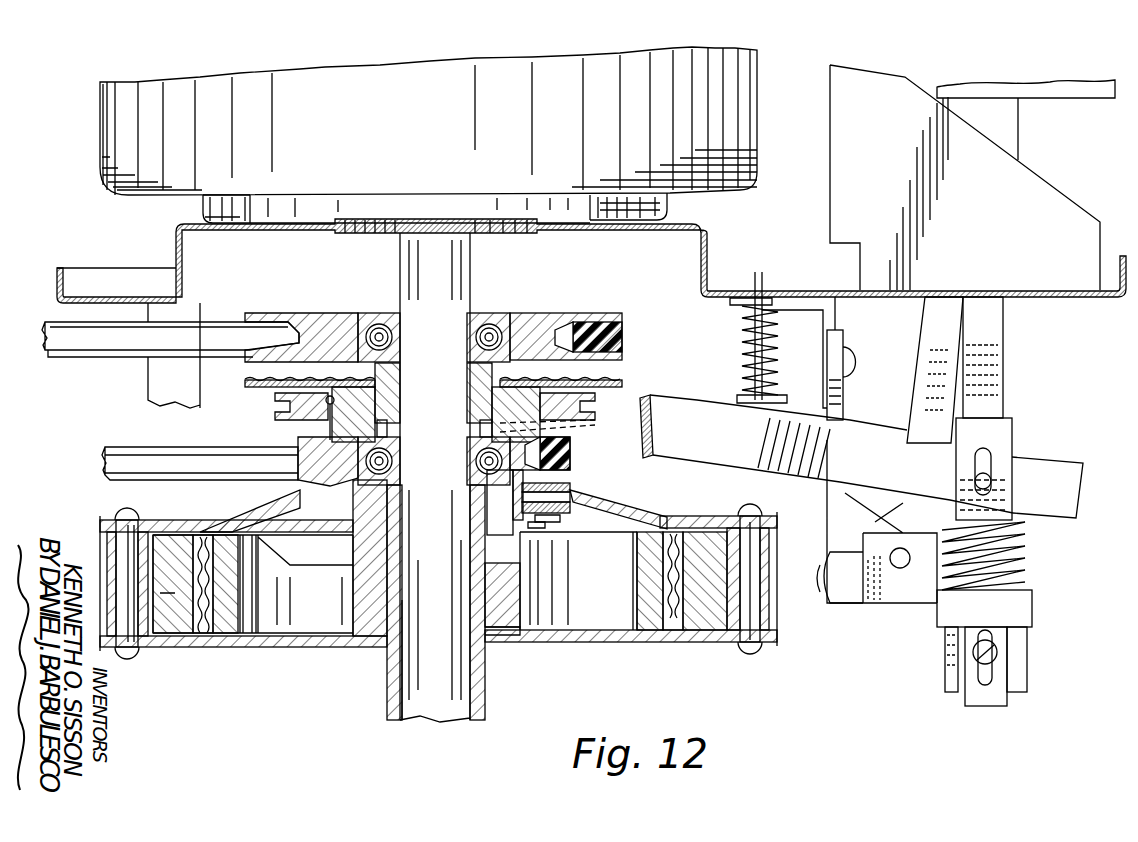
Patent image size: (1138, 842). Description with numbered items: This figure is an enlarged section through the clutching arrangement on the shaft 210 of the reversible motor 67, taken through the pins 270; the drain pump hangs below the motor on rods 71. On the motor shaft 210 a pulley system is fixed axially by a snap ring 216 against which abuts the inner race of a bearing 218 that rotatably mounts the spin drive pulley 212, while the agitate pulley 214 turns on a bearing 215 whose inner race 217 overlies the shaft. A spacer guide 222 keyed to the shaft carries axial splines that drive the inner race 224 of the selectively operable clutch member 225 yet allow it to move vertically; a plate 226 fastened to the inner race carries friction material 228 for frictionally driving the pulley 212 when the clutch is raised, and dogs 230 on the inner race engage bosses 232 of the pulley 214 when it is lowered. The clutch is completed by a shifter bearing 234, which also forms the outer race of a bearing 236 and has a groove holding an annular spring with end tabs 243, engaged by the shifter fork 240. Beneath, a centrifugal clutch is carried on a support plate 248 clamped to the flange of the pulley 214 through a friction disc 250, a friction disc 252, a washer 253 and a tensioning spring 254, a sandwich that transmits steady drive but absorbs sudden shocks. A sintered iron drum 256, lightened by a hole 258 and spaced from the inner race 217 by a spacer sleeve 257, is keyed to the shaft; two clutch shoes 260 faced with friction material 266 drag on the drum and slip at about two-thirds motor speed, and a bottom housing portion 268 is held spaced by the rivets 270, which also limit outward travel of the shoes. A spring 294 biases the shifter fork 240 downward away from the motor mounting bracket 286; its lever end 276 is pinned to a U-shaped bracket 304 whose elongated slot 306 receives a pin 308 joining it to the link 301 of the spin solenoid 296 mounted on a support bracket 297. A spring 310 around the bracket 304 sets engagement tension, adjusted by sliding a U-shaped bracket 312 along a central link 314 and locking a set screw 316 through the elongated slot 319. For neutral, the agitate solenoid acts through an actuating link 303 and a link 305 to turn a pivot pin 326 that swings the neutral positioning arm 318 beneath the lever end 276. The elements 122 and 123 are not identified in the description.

The reversible motor 67 is at (322, 85).
The rods 71 is at (150, 385).
The upper control arm 122 is at (85, 352).
The lower control arm 123 is at (120, 468).
The motor shaft 210 is at (435, 720).
The drive pulley 212 is at (624, 348).
The second drive pulley 214 is at (560, 485).
The bearing 215 is at (480, 450).
The snap ring 216 is at (480, 312).
The inner race 217 is at (395, 452).
The bearing 218 is at (395, 325).
The spacer guide 222 is at (392, 388).
The inner race 224 is at (362, 410).
The selectively operable clutch member 225 is at (232, 427).
The disc or plate 226 is at (272, 397).
The friction material 228 is at (262, 380).
The dogs 230 is at (680, 385).
The bosses 232 is at (580, 425).
The shifter bearing 234 is at (305, 395).
The bearing 236 is at (332, 395).
The shifter fork 240 is at (862, 440).
The end tabs 243 is at (624, 385).
The support plate 248 is at (695, 518).
The friction disc 250 is at (300, 492).
The friction disc 252 is at (560, 512).
The washer 253 is at (548, 520).
The tensioning spring 254 is at (540, 530).
The sintered iron drum 256 is at (240, 620).
The spacer sleeve 257 is at (390, 545).
The hole 258 is at (317, 605).
The clutch shoes 260 is at (183, 625).
The friction material 266 is at (205, 628).
The bottom housing portion 268 is at (680, 648).
The rivets 270 is at (127, 648).
The actuating lever end portion 276 is at (1055, 493).
The motor mounting bracket 286 is at (1075, 297).
The spring 294 is at (742, 315).
The spin solenoid 296 is at (1000, 88).
The support bracket 297 is at (868, 95).
The link 301 is at (1000, 347).
The actuating link 303 is at (933, 320).
The U-shaped bracket 304 is at (985, 428).
The link 305 is at (855, 495).
The elongated slot 306 is at (985, 458).
The pin 308 is at (988, 480).
The spring 310 is at (1020, 556).
The U-shaped bracket 312 is at (945, 668).
The central link 314 is at (1000, 700).
The set screw 316 is at (1000, 660).
The neutral positioning arm 318 is at (845, 580).
The elongated slot 319 is at (985, 685).
The neutral arm pivot pin 326 is at (900, 562).